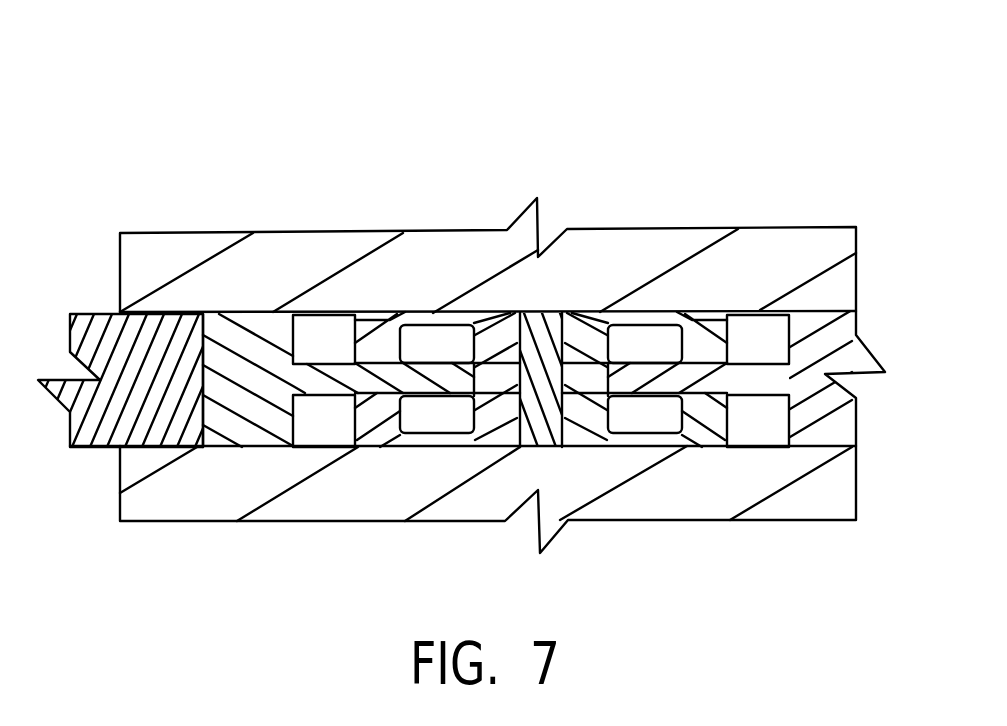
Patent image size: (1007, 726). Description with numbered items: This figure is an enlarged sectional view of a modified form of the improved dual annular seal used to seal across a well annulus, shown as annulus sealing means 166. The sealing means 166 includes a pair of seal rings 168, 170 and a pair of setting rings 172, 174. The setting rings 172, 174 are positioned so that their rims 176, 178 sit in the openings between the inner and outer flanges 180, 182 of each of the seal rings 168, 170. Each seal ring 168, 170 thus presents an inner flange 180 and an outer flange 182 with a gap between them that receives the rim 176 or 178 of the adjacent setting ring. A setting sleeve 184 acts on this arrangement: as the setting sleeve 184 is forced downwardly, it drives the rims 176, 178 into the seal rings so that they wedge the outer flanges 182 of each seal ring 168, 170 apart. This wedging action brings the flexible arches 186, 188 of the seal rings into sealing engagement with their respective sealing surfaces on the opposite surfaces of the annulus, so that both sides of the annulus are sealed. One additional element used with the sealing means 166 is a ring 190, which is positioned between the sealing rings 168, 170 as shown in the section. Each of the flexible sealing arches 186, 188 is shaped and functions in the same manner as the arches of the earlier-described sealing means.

The annulus sealing means 166 is at (597, 147).
The seal ring 168 is at (565, 318).
The seal ring 170 is at (512, 318).
The setting ring 172 is at (808, 315).
The setting ring 174 is at (230, 318).
The rim 176 is at (770, 358).
The rim 178 is at (333, 364).
The inner flange 180 is at (383, 447).
The outer flange 182 is at (397, 316).
The setting sleeve 184 is at (113, 447).
The flexible arch 186 is at (431, 434).
The flexible arch 188 is at (478, 318).
The ring 190 is at (522, 313).